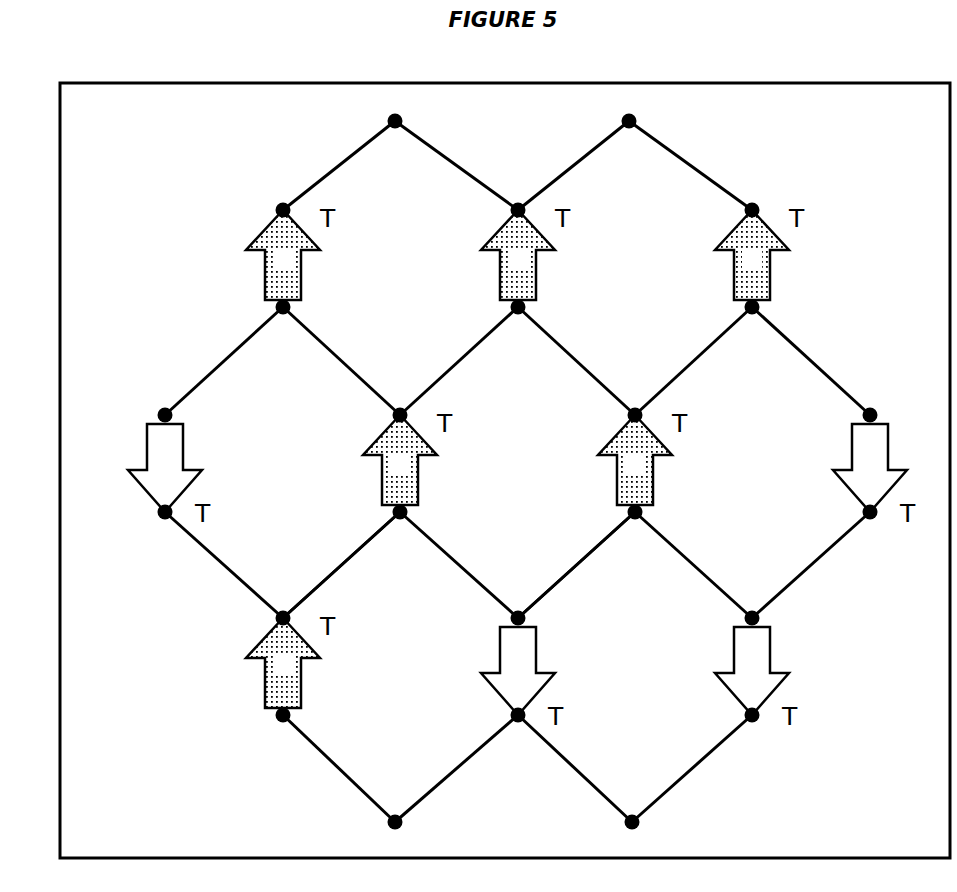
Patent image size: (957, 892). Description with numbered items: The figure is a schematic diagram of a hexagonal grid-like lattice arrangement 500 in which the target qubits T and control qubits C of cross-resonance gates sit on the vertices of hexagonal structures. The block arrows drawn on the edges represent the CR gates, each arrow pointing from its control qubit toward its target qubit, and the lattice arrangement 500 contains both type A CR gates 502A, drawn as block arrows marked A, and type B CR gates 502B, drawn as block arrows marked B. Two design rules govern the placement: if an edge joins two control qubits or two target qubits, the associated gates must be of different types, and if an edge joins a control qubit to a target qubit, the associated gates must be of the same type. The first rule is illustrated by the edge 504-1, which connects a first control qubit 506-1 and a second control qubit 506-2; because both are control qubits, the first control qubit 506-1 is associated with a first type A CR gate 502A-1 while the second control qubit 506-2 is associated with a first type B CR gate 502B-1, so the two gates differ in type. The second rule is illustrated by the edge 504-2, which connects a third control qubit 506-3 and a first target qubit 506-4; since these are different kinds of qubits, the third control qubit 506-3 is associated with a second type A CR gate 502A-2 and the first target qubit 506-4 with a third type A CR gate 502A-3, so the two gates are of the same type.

The lattice arrangement 500 is at (136, 128).
The type A CR gates 502A is at (260, 236).
The first type A CR gate 502A-1 is at (611, 441).
The second type A CR gate 502A-2 is at (376, 441).
The third type A CR gate 502A-3 is at (258, 646).
The type B CR gates 502B is at (146, 453).
The first type B CR gate 502B-1 is at (500, 660).
The edge 504-1 is at (555, 590).
The edge 504-2 is at (311, 588).
The first control qubit 506-1 is at (637, 519).
The second control qubit 506-2 is at (513, 622).
The third control qubit 506-3 is at (402, 519).
The first target qubit 506-4 is at (276, 614).